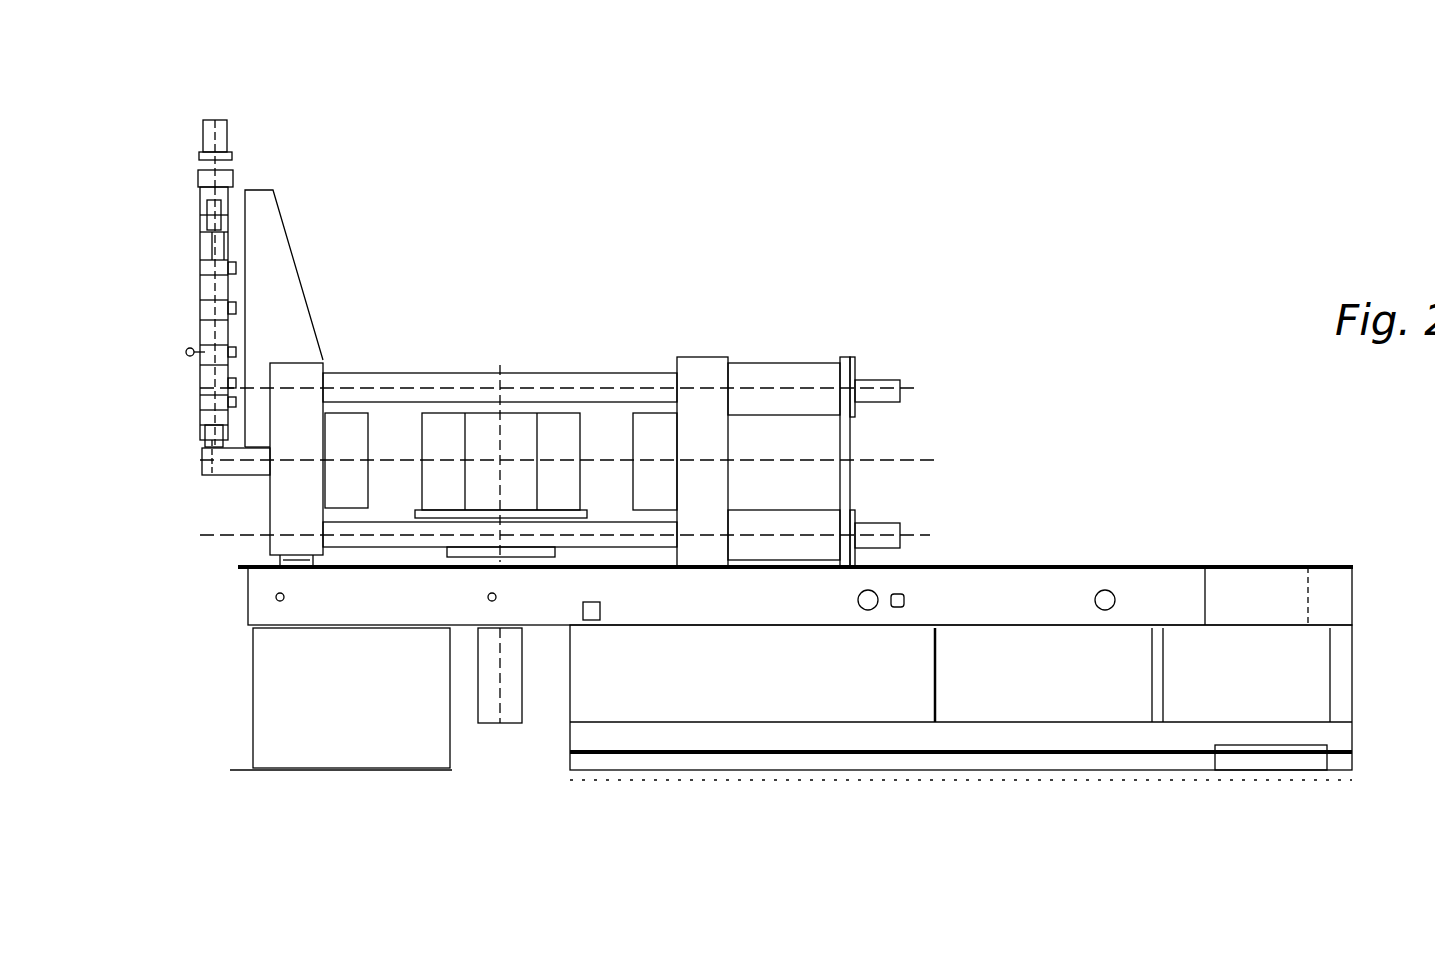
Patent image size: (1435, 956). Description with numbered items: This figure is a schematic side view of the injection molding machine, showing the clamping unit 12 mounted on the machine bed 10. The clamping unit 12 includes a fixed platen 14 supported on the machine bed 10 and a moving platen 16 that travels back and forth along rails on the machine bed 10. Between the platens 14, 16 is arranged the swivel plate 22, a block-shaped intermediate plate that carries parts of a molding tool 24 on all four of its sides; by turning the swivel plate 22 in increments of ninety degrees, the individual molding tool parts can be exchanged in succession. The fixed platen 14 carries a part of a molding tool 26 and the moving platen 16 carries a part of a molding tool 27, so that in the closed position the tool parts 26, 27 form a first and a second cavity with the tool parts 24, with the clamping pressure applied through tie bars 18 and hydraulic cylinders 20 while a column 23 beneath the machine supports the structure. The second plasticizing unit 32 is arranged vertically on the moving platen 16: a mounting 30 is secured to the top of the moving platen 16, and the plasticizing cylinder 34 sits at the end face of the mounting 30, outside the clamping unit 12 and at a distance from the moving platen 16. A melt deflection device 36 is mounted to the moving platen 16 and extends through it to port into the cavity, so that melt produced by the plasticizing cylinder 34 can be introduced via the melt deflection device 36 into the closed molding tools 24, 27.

The machine bed 10 is at (1085, 592).
The clamping unit 12 is at (524, 292).
The fixed platen 14 is at (718, 357).
The moving platen 16 is at (270, 518).
The tie bars 18 is at (610, 380).
The hydraulic cylinders 20 is at (806, 377).
The swivel plate 22 is at (484, 398).
The support column 23 is at (510, 715).
The molding tool 24 is at (487, 492).
The molding tool 26 is at (657, 433).
The molding tool 27 is at (347, 423).
The mounting 30 is at (263, 225).
The second plasticizing unit 32 is at (162, 140).
The plasticizing cylinder 34 is at (200, 386).
The melt deflection device 36 is at (225, 455).